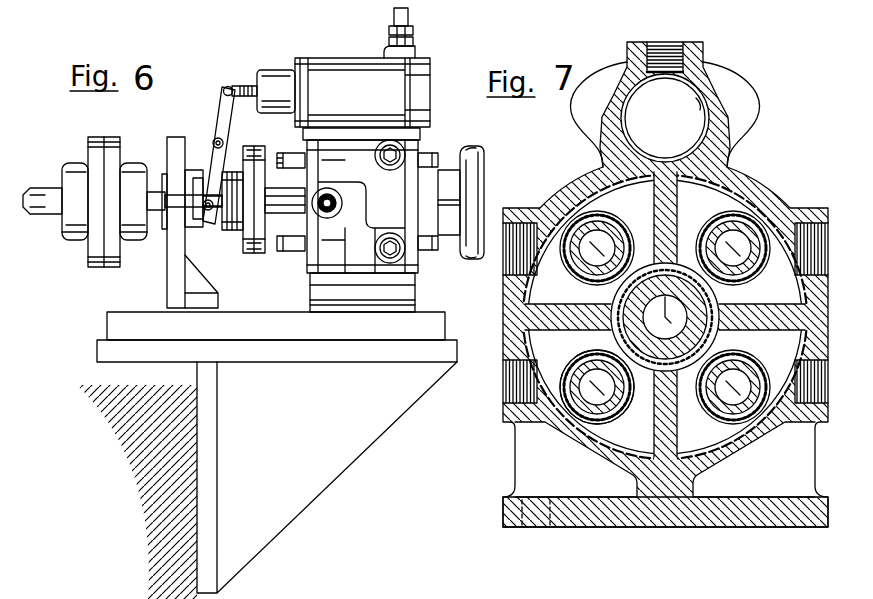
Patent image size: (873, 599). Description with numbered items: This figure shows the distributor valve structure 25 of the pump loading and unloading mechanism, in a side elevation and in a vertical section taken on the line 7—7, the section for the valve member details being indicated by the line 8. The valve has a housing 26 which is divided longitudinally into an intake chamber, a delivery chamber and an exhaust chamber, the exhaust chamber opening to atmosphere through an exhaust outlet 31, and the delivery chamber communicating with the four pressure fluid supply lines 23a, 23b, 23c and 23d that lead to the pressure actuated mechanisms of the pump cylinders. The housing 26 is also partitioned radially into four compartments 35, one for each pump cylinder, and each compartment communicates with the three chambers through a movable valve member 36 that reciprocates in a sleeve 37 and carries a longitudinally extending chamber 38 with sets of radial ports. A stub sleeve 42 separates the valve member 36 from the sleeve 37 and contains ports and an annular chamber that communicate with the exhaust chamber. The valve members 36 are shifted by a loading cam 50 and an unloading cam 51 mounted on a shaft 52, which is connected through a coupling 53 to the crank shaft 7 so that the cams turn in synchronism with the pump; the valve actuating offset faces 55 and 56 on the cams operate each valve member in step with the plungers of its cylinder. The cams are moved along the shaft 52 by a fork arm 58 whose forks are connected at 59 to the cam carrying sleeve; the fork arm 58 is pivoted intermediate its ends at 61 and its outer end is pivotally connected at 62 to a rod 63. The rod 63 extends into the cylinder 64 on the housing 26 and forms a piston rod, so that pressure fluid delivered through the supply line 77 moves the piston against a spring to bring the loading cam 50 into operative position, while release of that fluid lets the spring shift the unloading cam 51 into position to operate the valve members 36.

In FIG. 6, the crank shaft 7 is at (414, 45).
In FIG. 7, the section line 8- 8 is at (665, 555).
In FIG. 7, the pressure fluid supply line 23a is at (786, 400).
In FIG. 6, the pressure fluid supply line 23b is at (402, 265).
In FIG. 7, the pressure fluid supply line 23b is at (543, 423).
In FIG. 7, the pressure fluid supply line 23c is at (787, 237).
In FIG. 6, the pressure fluid supply line 23d is at (406, 149).
In FIG. 7, the pressure fluid supply line 23d is at (544, 240).
In FIG. 7, the distributor valve structure 25 is at (609, 529).
In FIG. 7, the housing 26 is at (710, 434).
In FIG. 6, the exhaust outlet 31 is at (343, 203).
In FIG. 7, the radial compartment 35 is at (733, 178).
In FIG. 6, the movable valve member 36 is at (283, 152).
In FIG. 7, the movable valve member 36 is at (607, 181).
In FIG. 7, the sleeve 37 is at (621, 231).
In FIG. 7, the longitudinally extending chamber 38 is at (598, 252).
In FIG. 7, the stub sleeve 42 is at (575, 366).
In FIG. 6, the loading cam 50 is at (252, 252).
In FIG. 6, the unloading cam 51 is at (476, 166).
In FIG. 6, the shaft 52 is at (157, 214).
In FIG. 6, the coupling 53 is at (82, 224).
In FIG. 6, the valve actuating offset face 55 is at (270, 256).
In FIG. 6, the valve actuating offset face 56 is at (466, 258).
In FIG. 6, the fork arm 58 is at (218, 112).
In FIG. 6, the fork connection 59 is at (204, 218).
In FIG. 6, the pivot 61 is at (215, 139).
In FIG. 6, the pivotal connection 62 is at (227, 86).
In FIG. 6, the rod 63 is at (243, 85).
In FIG. 6, the cylinder 64 is at (348, 70).
In FIG. 7, the cylinder 64 is at (707, 104).
In FIG. 6, the supply line 77 is at (408, 30).